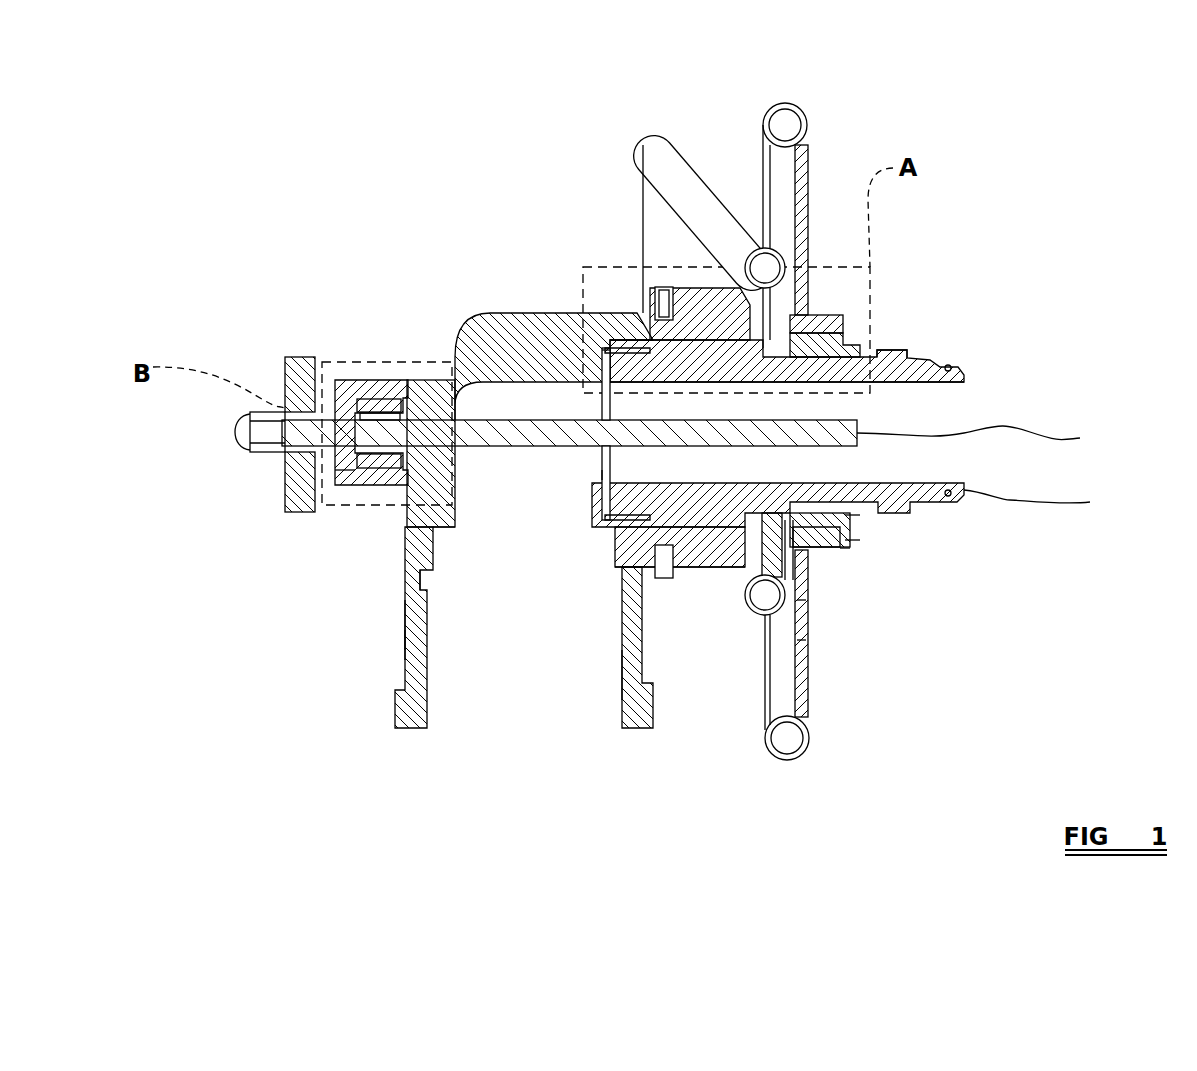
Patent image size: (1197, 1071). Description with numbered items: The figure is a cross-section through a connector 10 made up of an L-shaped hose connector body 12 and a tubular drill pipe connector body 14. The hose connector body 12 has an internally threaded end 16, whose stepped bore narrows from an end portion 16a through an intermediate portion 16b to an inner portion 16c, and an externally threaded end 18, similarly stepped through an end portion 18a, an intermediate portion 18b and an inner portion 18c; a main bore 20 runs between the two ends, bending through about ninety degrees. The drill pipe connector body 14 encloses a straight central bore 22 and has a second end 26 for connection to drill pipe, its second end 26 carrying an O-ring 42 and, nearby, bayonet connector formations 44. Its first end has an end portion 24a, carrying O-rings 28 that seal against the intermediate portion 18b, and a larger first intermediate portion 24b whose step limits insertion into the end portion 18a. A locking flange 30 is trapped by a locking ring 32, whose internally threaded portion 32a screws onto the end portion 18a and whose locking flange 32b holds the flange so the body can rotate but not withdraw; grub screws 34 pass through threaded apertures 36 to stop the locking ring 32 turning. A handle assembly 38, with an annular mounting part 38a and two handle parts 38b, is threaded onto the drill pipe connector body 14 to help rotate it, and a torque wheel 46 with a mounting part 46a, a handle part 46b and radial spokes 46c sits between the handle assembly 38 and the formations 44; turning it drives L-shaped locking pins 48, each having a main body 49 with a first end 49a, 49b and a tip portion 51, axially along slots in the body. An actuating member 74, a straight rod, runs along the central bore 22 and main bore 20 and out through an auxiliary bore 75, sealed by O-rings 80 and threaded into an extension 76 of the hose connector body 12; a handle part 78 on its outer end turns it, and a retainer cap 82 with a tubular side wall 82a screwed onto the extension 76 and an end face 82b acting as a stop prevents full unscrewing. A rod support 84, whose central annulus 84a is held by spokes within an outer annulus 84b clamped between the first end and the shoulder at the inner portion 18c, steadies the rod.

The connector 10 is at (358, 656).
The hose connector body 12 is at (492, 310).
The drill pipe connector body 14 is at (935, 510).
The internally threaded end 16 is at (405, 667).
The end portion 16a is at (405, 642).
The intermediate portion 16b is at (432, 562).
The inner portion 16c is at (450, 524).
The externally threaded end 18 is at (775, 527).
The end portion 18a is at (650, 328).
The intermediate portion 18b is at (606, 345).
The inner portion 18c is at (540, 340).
The main bore 20 is at (425, 507).
The central bore 22 is at (912, 390).
The end portion 24a is at (612, 530).
The first intermediate portion 24b is at (625, 542).
The second end 26 is at (966, 493).
The O-ring 28 is at (690, 300).
The locking flange 30 is at (687, 287).
The locking ring 32 is at (755, 605).
The internally threaded portion 32a is at (622, 687).
The locking flange 32b is at (737, 600).
The grub screw 34 is at (660, 290).
The threaded aperture 36 is at (656, 566).
The handle assembly 38 is at (685, 148).
The annular mounting part 38a is at (760, 258).
The handle part 38b is at (800, 602).
The O-ring 42 is at (950, 365).
The bayonet connector formation 44 is at (893, 350).
The torque wheel 46 is at (828, 733).
The mounting part 46a is at (855, 562).
The handle part 46b is at (808, 757).
The radial spoke 46c is at (840, 552).
The locking pin 48 is at (862, 548).
The main body 49 is at (862, 542).
The first end 49a is at (850, 557).
The spring end 49b is at (858, 535).
The tip portion 51 is at (845, 554).
The actuating member 74 is at (964, 433).
The auxiliary bore 75 is at (408, 375).
The extension 76 is at (350, 398).
The handle part 78 is at (294, 357).
The O-ring 80 is at (385, 398).
The retainer cap 82 is at (340, 380).
The tubular side wall 82a is at (370, 398).
The end face 82b is at (345, 467).
The rod support 84 is at (602, 447).
The central annulus 84a is at (601, 350).
The outer annulus 84b is at (590, 476).